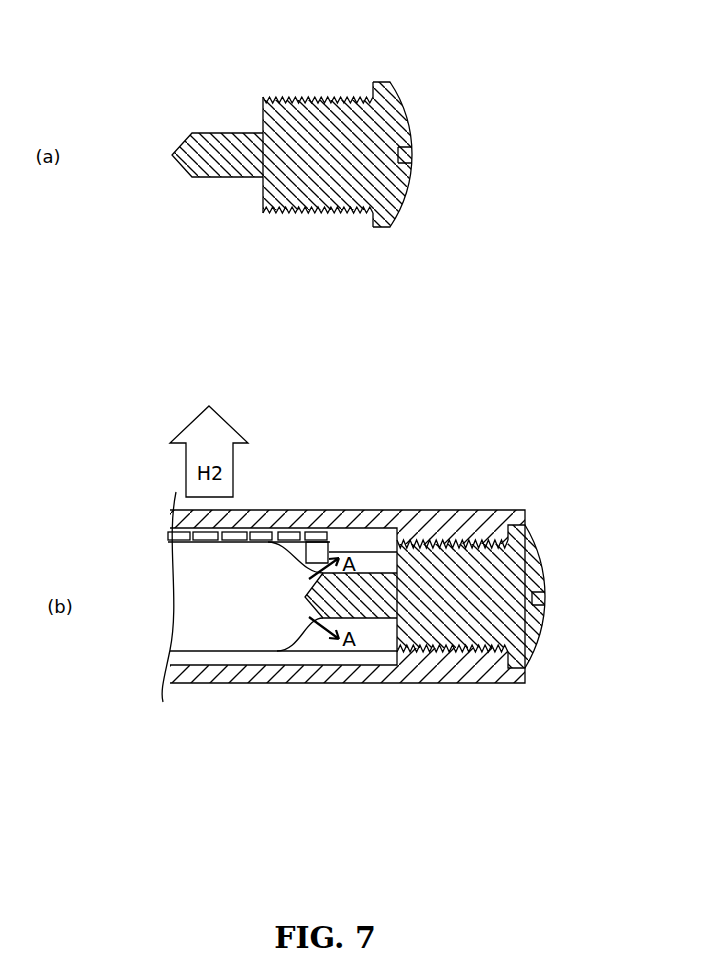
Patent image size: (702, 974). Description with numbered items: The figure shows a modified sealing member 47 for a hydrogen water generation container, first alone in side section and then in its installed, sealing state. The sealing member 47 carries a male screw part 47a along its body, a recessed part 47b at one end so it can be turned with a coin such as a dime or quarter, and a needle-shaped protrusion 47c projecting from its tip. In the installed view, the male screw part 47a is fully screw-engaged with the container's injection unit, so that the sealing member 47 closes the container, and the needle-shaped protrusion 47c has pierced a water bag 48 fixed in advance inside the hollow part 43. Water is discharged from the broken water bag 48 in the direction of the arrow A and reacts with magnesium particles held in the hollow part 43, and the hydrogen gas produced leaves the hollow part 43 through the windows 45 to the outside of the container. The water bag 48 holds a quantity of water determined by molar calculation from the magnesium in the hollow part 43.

The sealing member 47 is at (399, 339).
The male screw part 47a is at (293, 100).
The recessed part 47b is at (410, 160).
The needle-shaped protrusion 47c is at (200, 177).
The windows 45 is at (290, 535).
The water bag 48 is at (247, 603).
The hollow part 43 is at (313, 662).